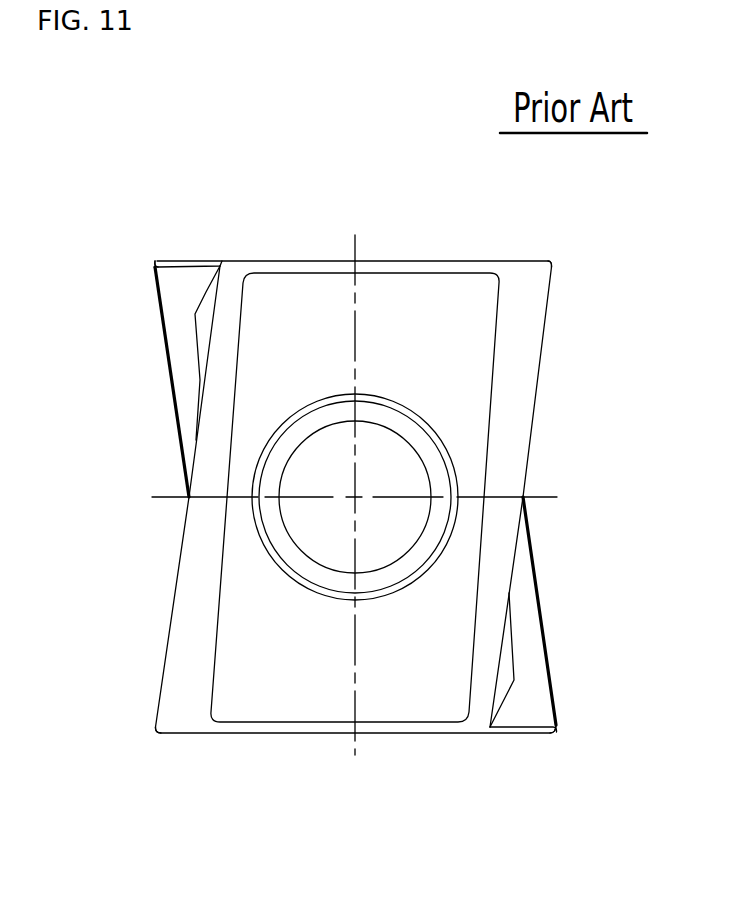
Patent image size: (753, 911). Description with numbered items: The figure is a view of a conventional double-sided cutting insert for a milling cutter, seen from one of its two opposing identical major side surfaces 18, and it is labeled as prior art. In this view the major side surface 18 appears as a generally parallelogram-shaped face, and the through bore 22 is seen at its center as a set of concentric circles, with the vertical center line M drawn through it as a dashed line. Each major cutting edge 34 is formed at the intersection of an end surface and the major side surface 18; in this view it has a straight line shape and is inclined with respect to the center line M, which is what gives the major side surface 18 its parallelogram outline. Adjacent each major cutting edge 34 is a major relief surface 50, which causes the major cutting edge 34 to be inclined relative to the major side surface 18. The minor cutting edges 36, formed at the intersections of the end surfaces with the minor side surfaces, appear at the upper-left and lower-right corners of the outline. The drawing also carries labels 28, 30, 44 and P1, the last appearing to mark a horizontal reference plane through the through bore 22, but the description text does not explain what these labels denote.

The major side surface 18 is at (472, 342).
The through bore 22 is at (418, 453).
The corner 28 is at (153, 261).
The cutting edge 30 is at (207, 261).
The major cutting edge 34 is at (175, 568).
The minor cutting edge 36 is at (182, 261).
The land 44 is at (180, 339).
The major relief surface 50 is at (193, 625).
The center line M is at (357, 261).
The median plane P1 is at (550, 497).